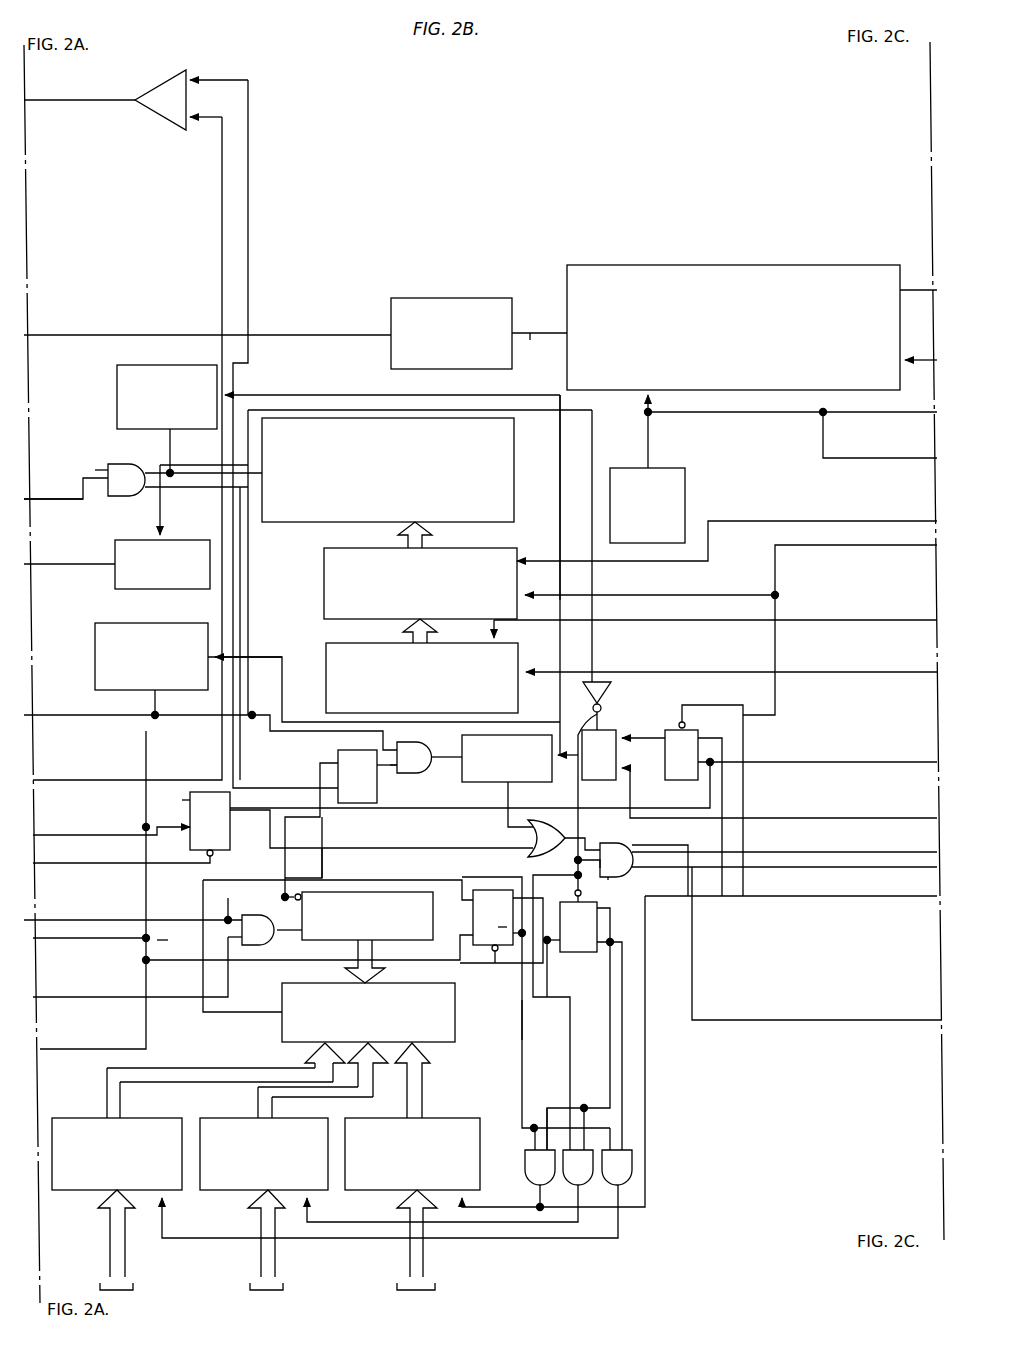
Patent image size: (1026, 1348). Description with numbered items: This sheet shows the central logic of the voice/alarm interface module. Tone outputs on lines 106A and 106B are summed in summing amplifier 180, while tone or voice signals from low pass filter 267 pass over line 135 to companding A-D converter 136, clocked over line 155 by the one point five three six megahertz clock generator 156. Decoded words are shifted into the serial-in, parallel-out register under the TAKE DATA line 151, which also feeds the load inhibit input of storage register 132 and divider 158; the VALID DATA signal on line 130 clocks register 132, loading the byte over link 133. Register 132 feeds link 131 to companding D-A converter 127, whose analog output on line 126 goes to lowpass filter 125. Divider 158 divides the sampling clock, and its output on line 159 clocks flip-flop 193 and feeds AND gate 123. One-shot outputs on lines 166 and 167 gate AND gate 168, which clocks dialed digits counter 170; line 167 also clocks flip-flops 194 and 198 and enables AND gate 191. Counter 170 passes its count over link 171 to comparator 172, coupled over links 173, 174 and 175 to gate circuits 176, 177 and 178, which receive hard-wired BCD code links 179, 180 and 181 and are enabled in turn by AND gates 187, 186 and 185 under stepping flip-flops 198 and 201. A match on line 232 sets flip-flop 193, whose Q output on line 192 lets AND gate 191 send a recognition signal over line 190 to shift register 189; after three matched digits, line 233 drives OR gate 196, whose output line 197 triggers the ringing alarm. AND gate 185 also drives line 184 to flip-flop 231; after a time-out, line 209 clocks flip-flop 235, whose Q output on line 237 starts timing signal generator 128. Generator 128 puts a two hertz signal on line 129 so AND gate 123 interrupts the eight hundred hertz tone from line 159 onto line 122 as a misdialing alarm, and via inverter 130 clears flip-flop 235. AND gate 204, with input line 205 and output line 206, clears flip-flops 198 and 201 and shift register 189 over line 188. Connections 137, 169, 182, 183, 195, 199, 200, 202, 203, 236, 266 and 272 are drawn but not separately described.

The line 106A is at (103, 835).
The line 106B is at (130, 780).
The line 122 is at (100, 470).
The AND gate 123 is at (108, 495).
The lowpass filter 125 is at (132, 540).
The line 126 is at (165, 510).
The companding D-A converter 127 is at (292, 410).
The timing signal generator 128 is at (130, 365).
The line 129 is at (170, 445).
The inverter 130 is at (740, 521).
The link 131 is at (428, 542).
The storage register 132 is at (324, 578).
The link 133 is at (405, 640).
The line 135 is at (532, 333).
The companding A-D converter 136 is at (708, 265).
The output line 137 is at (918, 290).
The line 151 is at (282, 650).
The line 155 is at (652, 440).
The clock generator 156 is at (685, 485).
The divide-by-ten counter 158 is at (172, 623).
The line 159 is at (255, 565).
The line 166 is at (182, 920).
The line 167 is at (318, 720).
The AND gate 168 is at (265, 948).
The clear line 169 is at (296, 893).
The dialed digits counter 170 is at (385, 892).
The link 171 is at (375, 962).
The comparator 172 is at (282, 1030).
The link 173 is at (215, 1068).
The link 174 is at (345, 1098).
The link 175 is at (425, 1098).
The gate circuit 176 is at (90, 1118).
The gate circuit 177 is at (230, 1118).
The gate circuit 178 is at (412, 1154).
The BCD digit code link 179 is at (110, 1266).
The summing amplifier 180 is at (172, 75).
The BCD digit code link 181 is at (430, 1256).
The line 182 is at (162, 1222).
The line 183 is at (310, 1212).
The line 184 is at (488, 1207).
The AND gate 185 is at (525, 1160).
The AND gate 186 is at (598, 1238).
The AND gate 187 is at (632, 1173).
The line 188 is at (598, 716).
The shift register 189 is at (540, 735).
The line 190 is at (450, 755).
The AND gate 191 is at (418, 773).
The line 192 is at (380, 775).
The flip-flop 193 is at (355, 803).
The flip-flop 194 is at (224, 850).
The line 195 is at (448, 848).
The OR gate 196 is at (565, 828).
The line 197 is at (700, 840).
The flip-flop 198 is at (488, 890).
The line 199 is at (528, 1040).
The flip-flop 200 is at (550, 980).
The flip-flop 201 is at (612, 962).
The line 202 is at (610, 878).
The line 203 is at (624, 1008).
The AND gate 204 is at (640, 843).
The line 205 is at (818, 852).
The line 206 is at (680, 890).
The line 209 is at (852, 818).
The flip-flop 231 is at (695, 725).
The line 232 is at (330, 862).
The line 233 is at (510, 804).
The flip-flop 235 is at (628, 790).
The line 236 is at (642, 750).
The line 237 is at (592, 495).
The line 266 is at (170, 334).
The low pass filter 267 is at (465, 298).
The line 272 is at (922, 362).